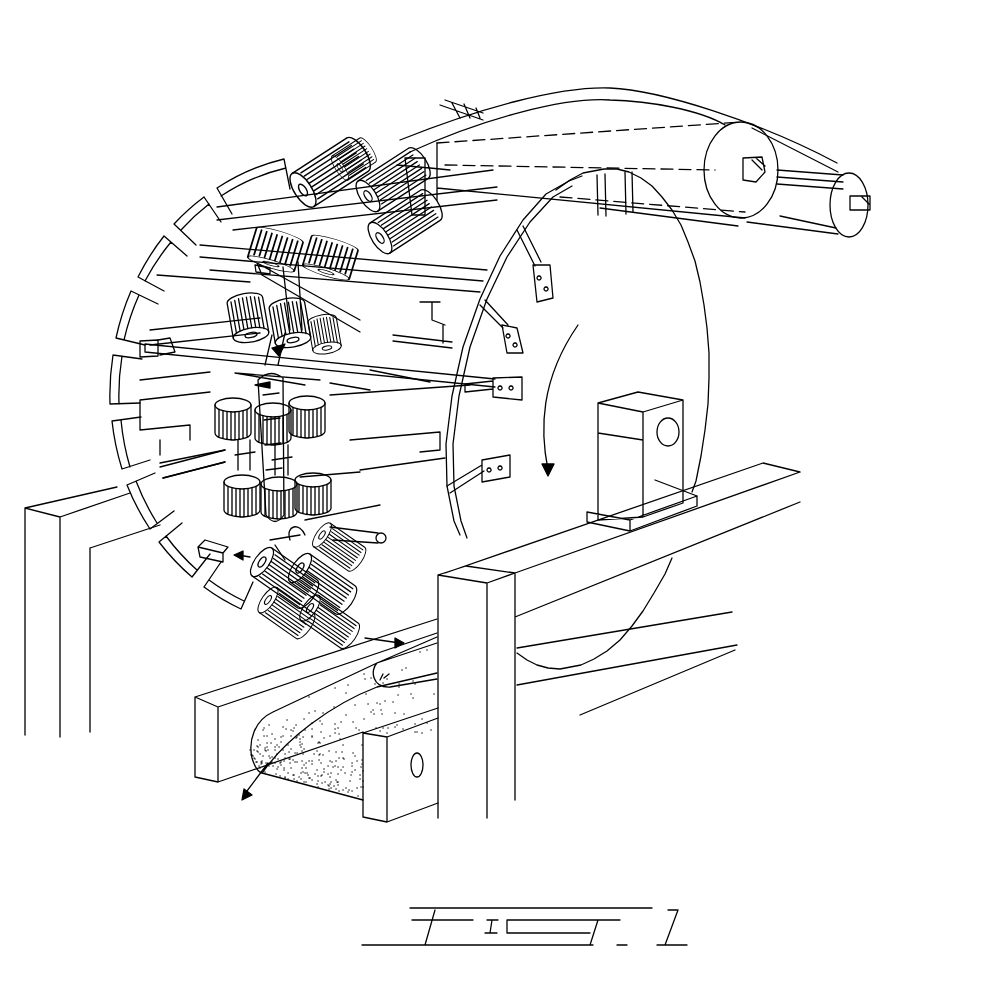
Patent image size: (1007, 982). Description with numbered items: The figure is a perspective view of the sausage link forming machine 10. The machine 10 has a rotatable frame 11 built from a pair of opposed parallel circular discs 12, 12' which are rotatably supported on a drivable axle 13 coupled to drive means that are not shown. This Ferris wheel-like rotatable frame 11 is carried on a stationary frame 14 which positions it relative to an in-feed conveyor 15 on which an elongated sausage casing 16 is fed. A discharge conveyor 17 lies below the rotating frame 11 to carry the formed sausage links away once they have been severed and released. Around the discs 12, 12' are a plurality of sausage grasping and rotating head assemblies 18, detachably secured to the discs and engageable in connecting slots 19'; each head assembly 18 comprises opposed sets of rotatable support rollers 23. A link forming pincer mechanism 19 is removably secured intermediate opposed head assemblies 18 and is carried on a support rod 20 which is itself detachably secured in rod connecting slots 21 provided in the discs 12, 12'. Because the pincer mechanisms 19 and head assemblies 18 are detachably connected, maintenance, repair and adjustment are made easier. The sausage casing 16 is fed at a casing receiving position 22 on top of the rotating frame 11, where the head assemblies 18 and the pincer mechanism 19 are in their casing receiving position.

The sausage forming machine 10 is at (236, 118).
The rotatable frame 11 is at (712, 330).
The circular disc 12 is at (437, 720).
The circular disc 12' is at (289, 384).
The drivable axle 13 is at (668, 420).
The stationary frame 14 is at (762, 497).
The in-feed conveyor 15 is at (677, 165).
The sausage casing 16 is at (575, 82).
The discharge conveyor 17 is at (328, 763).
The sausage grasping and rotating head assembly 18 is at (388, 150).
The link forming pincer mechanism 19 is at (310, 392).
The connecting slot 19' is at (314, 418).
The support rod 20 is at (167, 318).
The rod connecting slot 21 is at (500, 313).
The casing receiving position 22 is at (343, 122).
The support roller 23 is at (208, 613).